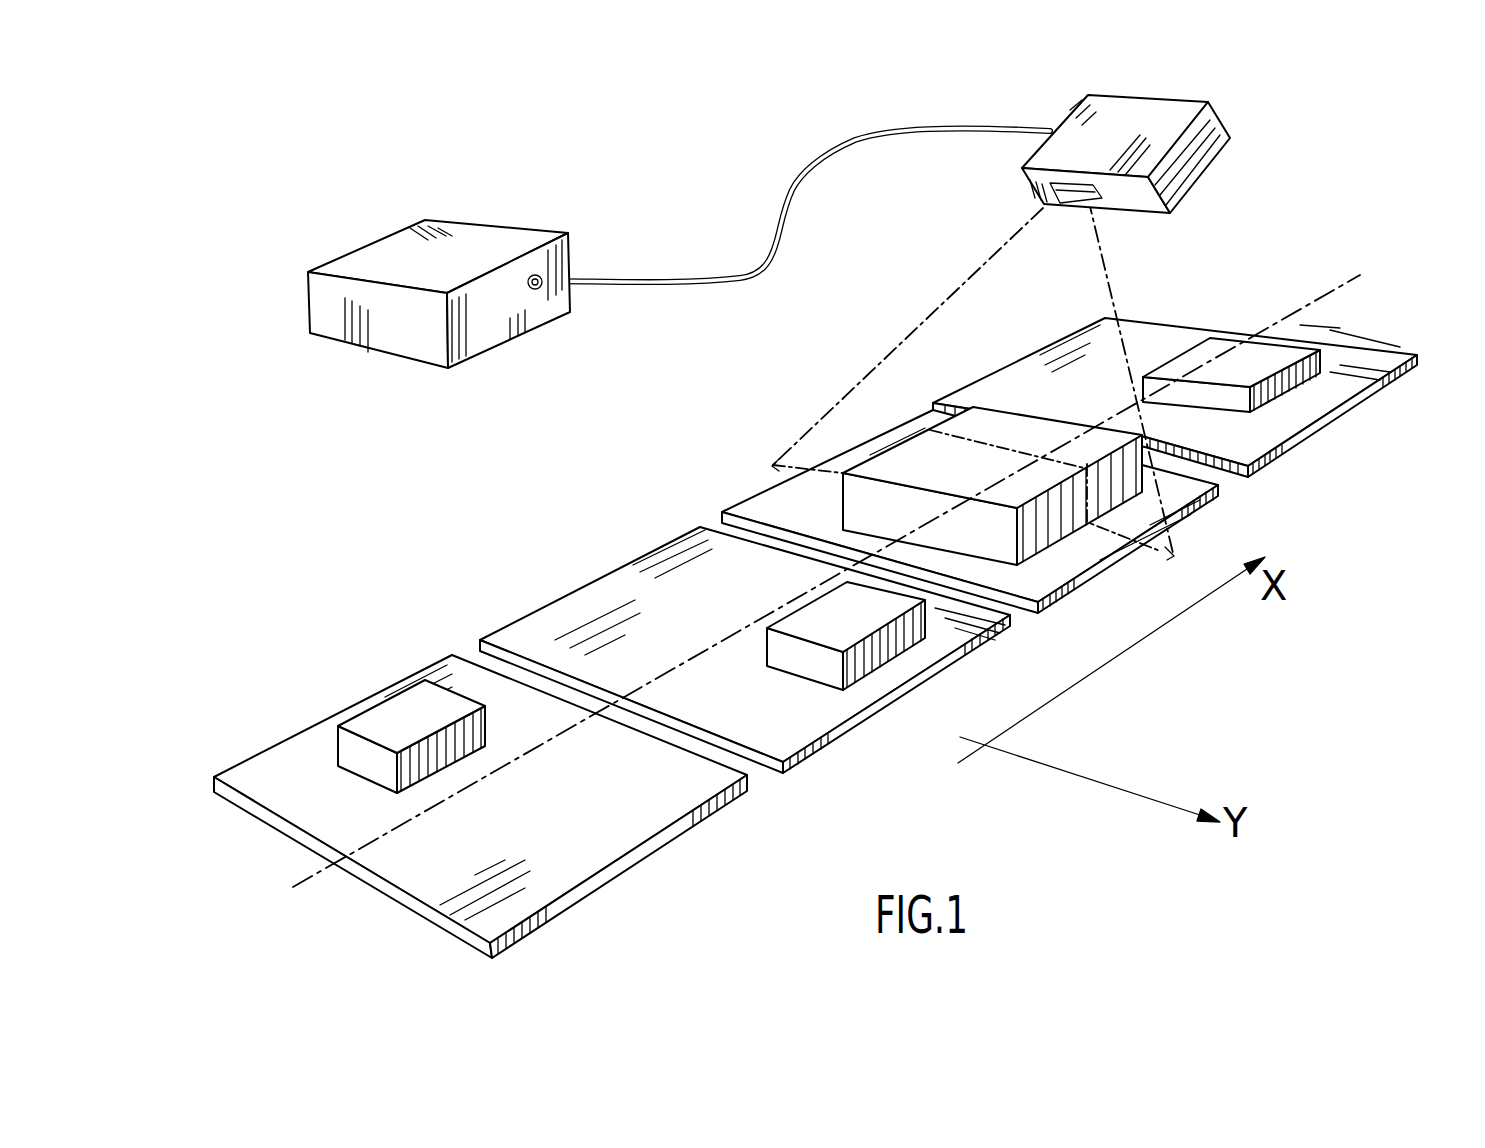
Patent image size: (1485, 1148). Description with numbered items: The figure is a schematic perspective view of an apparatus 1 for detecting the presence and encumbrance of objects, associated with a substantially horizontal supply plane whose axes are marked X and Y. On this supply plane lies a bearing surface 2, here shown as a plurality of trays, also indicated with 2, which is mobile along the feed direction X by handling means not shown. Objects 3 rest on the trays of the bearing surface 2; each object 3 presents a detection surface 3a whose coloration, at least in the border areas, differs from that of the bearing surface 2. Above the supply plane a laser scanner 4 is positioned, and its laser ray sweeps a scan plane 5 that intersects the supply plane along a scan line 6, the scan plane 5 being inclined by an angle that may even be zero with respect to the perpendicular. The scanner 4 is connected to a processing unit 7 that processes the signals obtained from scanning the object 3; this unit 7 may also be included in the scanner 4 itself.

The apparatus 1 is at (1300, 214).
The bearing surface 2 is at (661, 795).
The object 3 is at (448, 755).
The detection surface 3a is at (383, 720).
The laser scanner 4 is at (1197, 145).
The scan plane 5 is at (967, 333).
The scan line 6 is at (832, 460).
The processing unit 7 is at (508, 242).